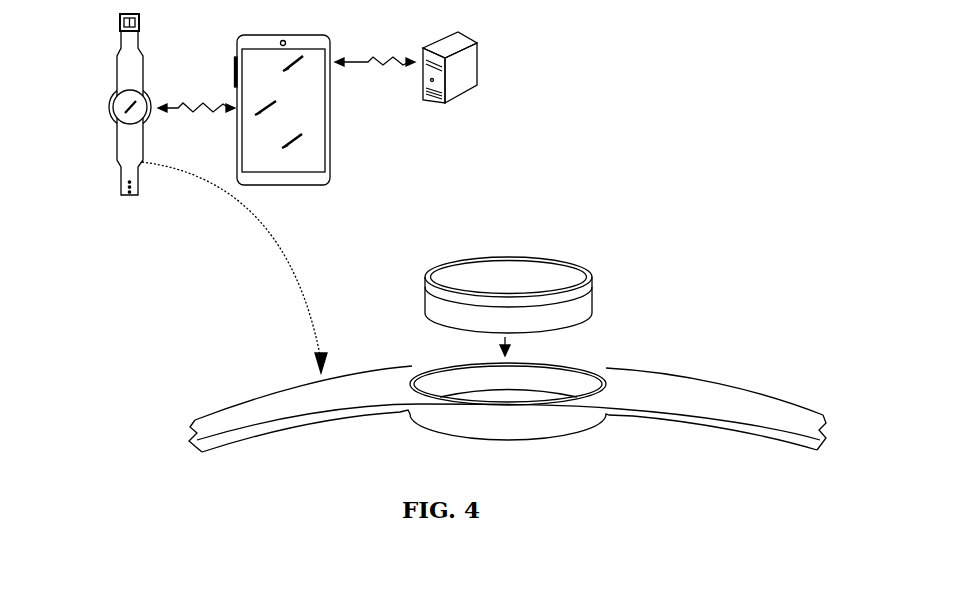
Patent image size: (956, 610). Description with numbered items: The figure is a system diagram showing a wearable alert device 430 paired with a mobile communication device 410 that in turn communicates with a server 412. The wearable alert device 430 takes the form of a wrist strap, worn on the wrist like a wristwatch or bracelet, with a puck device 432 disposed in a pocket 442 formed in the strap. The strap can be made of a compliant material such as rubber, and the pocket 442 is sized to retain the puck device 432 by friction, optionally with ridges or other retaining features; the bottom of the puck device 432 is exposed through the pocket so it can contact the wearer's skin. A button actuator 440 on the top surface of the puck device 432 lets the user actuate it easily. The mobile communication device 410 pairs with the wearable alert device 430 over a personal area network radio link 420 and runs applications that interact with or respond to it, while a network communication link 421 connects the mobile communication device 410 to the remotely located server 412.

The mobile communication device 410 is at (237, 52).
The server 412 is at (477, 52).
The personal area network radio link 420 is at (196, 119).
The network communication link 421 is at (375, 74).
The wearable alert device 430 is at (117, 83).
The puck device 432 is at (118, 106).
The button actuator 440 is at (478, 274).
The pocket 442 is at (553, 376).